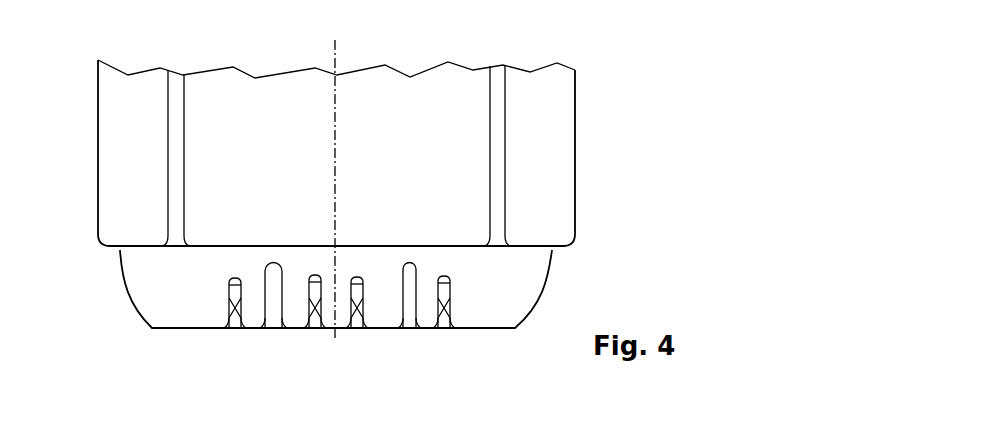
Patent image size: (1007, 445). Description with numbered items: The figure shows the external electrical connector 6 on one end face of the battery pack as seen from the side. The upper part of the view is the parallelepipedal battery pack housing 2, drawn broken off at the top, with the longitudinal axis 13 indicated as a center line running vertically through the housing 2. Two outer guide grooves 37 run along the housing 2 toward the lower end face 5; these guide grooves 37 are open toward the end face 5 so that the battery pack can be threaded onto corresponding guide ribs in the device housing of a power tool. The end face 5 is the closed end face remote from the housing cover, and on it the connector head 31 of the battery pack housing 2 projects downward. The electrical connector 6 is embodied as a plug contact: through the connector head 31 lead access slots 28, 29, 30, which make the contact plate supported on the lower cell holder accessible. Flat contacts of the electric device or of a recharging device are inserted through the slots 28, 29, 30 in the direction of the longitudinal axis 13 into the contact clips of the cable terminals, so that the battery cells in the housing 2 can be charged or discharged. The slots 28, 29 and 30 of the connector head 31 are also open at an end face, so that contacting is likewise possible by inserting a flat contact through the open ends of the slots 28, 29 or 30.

The battery pack housing 2 is at (575, 139).
The outer guide groove 37 is at (173, 82).
The longitudinal axis 13 is at (336, 63).
The end face 5 is at (122, 253).
The connector head 31 is at (167, 293).
The slot 28 is at (238, 328).
The slot 29 is at (318, 328).
The slot 30 is at (440, 328).
The external electrical connector 6 is at (238, 362).